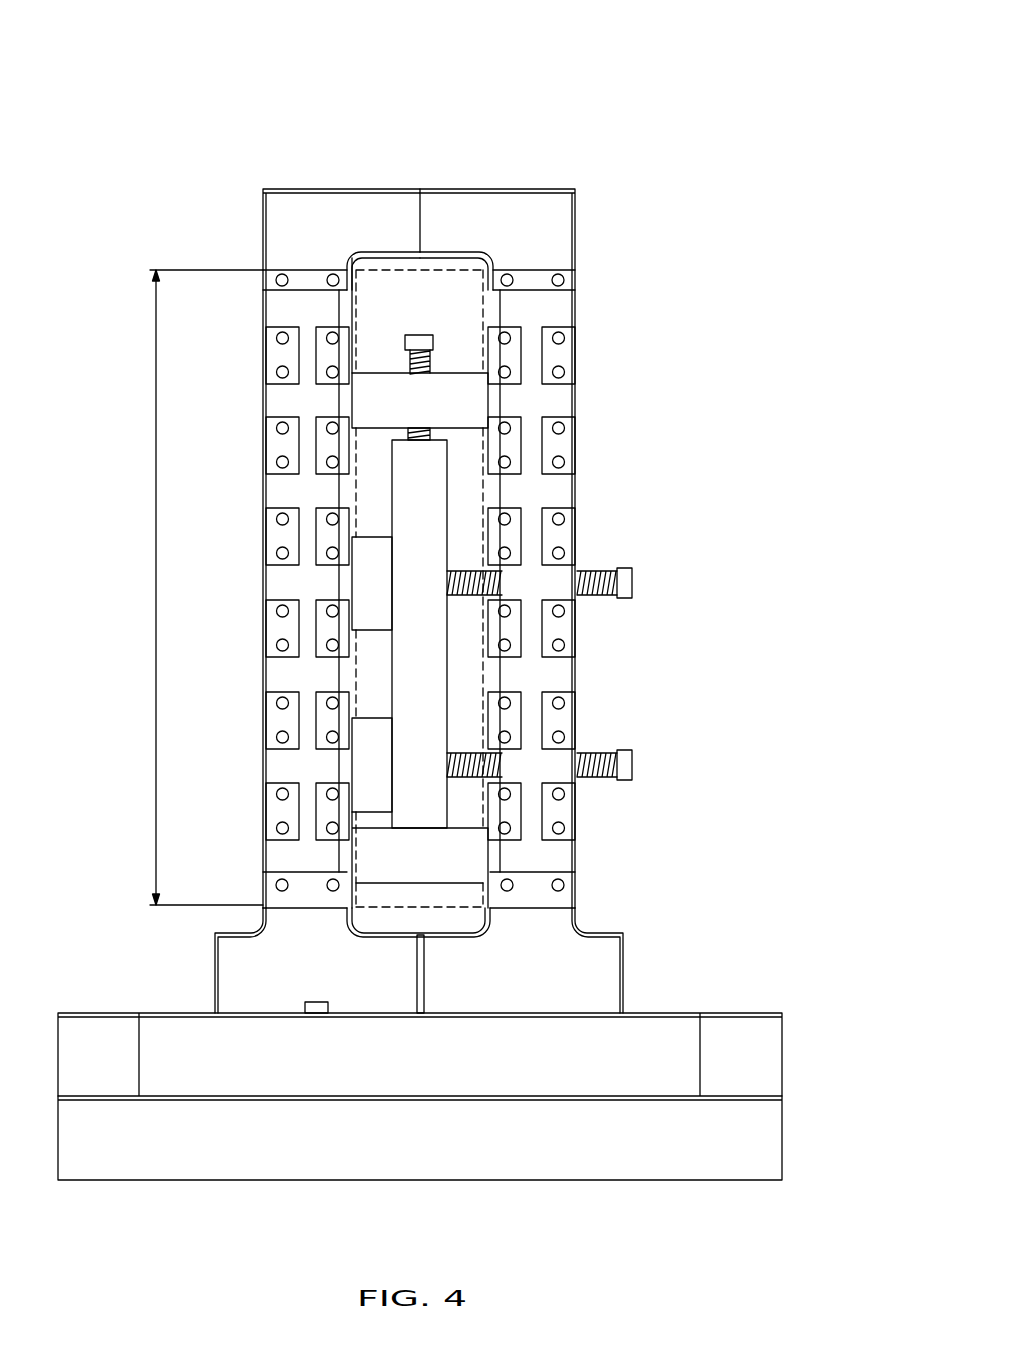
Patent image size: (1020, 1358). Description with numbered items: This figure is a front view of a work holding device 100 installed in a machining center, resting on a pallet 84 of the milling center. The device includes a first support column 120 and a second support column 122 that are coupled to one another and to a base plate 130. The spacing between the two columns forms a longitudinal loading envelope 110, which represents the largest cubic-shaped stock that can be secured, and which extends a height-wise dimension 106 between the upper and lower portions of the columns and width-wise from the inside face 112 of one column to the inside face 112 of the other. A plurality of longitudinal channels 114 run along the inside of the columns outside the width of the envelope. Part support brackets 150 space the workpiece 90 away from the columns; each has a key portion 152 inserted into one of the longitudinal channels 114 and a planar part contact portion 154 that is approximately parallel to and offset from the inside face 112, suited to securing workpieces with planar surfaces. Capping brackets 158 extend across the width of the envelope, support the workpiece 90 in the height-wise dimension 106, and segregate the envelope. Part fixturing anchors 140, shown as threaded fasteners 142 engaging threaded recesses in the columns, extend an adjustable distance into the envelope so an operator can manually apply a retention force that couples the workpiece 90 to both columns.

The work holding device 100 is at (615, 93).
The first support column 120 is at (338, 183).
The second support column 122 is at (497, 183).
The height-wise dimension 106 is at (198, 587).
The inside face 112 is at (352, 332).
The longitudinal channels 114 is at (350, 509).
The key portion 152 is at (338, 593).
The capping brackets 158 is at (353, 401).
The longitudinal loading envelope 110 is at (358, 462).
The workpiece 90 is at (447, 698).
The planar part contact portion 154 is at (390, 550).
The part support brackets 150 is at (490, 410).
The part fixturing anchors 140 is at (390, 307).
The threaded fasteners 142 is at (424, 335).
The base plate 130 is at (730, 1010).
The pallet 84 is at (772, 1138).